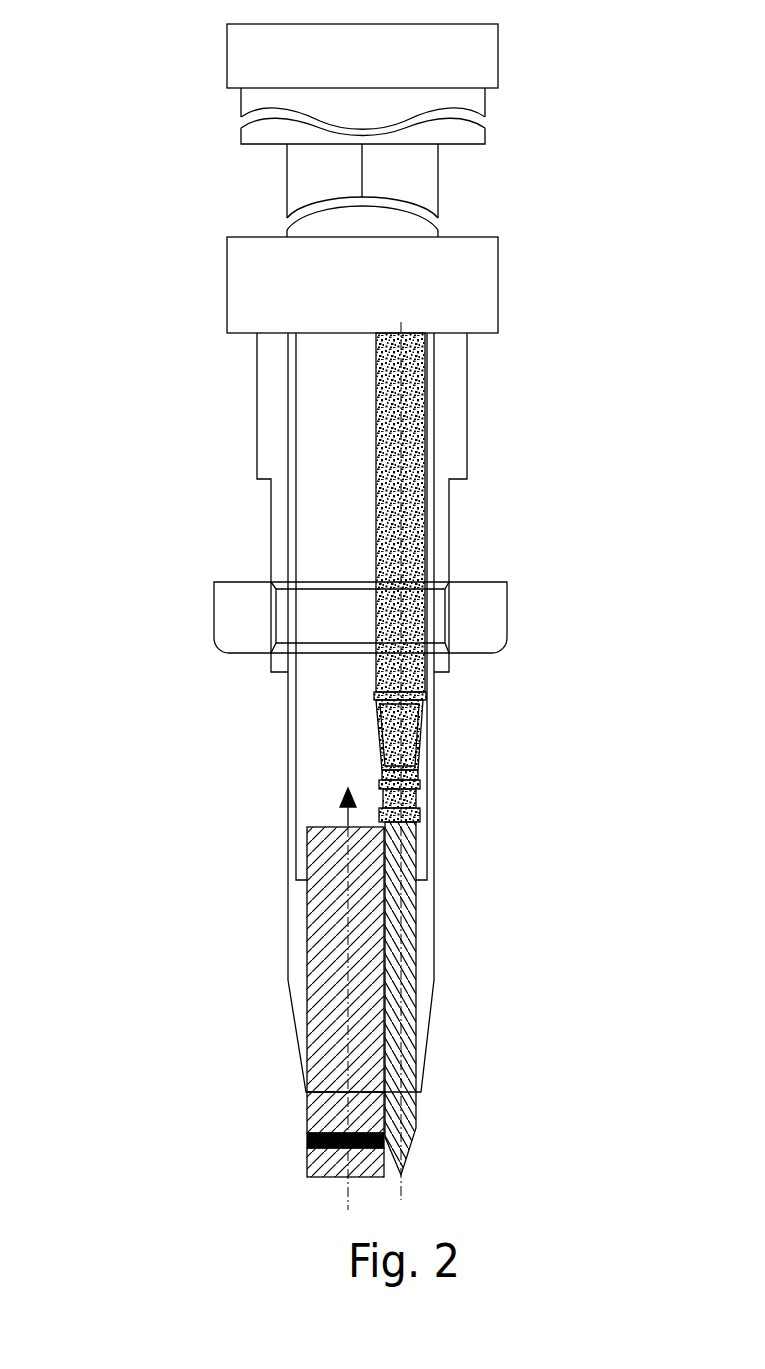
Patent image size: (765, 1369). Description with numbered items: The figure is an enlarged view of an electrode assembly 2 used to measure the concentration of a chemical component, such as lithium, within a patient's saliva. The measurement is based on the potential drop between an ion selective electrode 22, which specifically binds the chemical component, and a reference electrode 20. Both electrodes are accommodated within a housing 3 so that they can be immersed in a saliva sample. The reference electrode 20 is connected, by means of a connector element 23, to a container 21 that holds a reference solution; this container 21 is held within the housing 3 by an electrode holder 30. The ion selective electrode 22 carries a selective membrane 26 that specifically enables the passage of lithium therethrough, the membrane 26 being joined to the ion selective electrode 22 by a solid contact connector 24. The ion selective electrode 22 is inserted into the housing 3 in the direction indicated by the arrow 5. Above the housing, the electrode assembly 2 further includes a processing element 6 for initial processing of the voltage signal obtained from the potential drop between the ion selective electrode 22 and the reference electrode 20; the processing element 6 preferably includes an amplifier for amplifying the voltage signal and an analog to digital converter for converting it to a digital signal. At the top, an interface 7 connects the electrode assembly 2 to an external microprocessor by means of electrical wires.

The electrode assembly 2 is at (265, 733).
The housing 3 is at (287, 800).
The arrow 5 is at (345, 812).
The processing element 6 is at (227, 277).
The interface 7 is at (227, 53).
The reference electrode 20 is at (407, 1155).
The container 21 is at (415, 675).
The ion selective electrode 22 is at (333, 1012).
The connector element 23 is at (417, 803).
The solid contact connector 24 is at (310, 1143).
The selective membrane 26 is at (332, 1165).
The electrode holder 30 is at (497, 607).